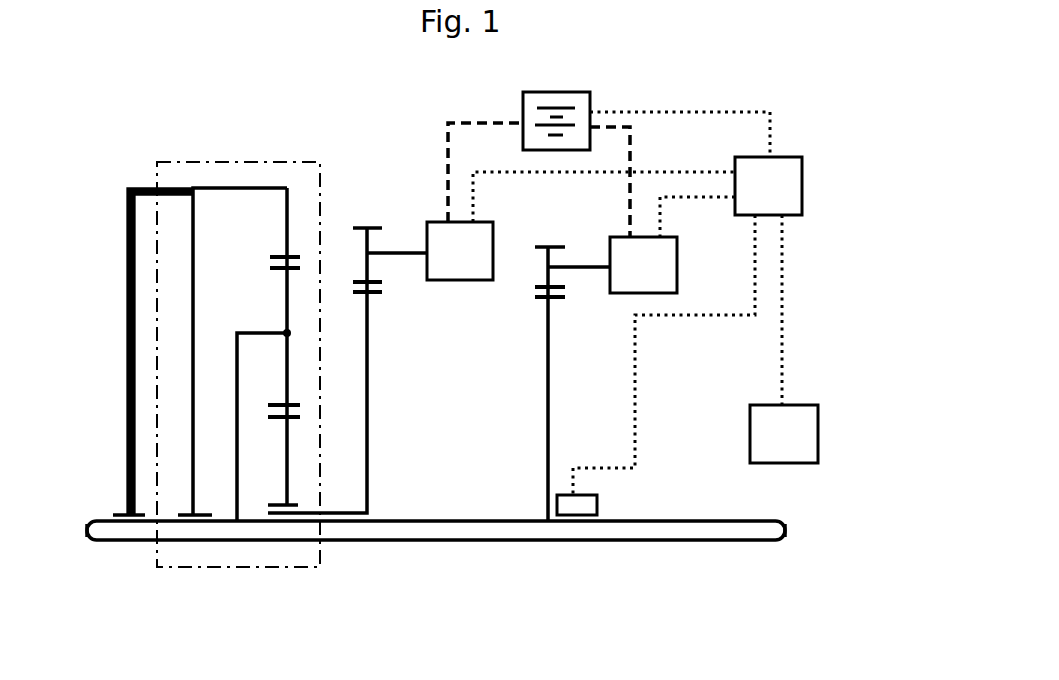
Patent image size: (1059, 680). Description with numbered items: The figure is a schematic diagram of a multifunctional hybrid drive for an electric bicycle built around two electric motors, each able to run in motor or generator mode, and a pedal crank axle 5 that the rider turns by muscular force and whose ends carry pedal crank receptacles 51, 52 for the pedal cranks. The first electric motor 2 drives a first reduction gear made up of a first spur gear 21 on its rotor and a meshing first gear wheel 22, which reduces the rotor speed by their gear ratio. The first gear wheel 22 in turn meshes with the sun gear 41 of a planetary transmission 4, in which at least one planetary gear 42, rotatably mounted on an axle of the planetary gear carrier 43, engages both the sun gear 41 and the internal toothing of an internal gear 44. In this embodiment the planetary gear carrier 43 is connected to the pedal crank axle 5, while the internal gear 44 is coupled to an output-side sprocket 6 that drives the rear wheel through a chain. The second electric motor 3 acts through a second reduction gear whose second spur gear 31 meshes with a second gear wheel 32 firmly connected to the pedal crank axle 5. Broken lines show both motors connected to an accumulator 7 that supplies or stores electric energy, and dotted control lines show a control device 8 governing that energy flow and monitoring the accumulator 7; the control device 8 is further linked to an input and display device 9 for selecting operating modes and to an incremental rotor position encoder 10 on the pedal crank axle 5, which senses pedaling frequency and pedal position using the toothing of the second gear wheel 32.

The first electric motor 2 is at (458, 267).
The second electric motor 3 is at (653, 258).
The planetary transmission 4 is at (233, 170).
The pedal crank axle 5 is at (447, 527).
The output-side sprocket 6 is at (130, 318).
The accumulator 7 is at (588, 100).
The control device 8 is at (795, 187).
The input and display device 9 is at (783, 435).
The incremental rotor position encoder 10 is at (583, 508).
The first spur gear 21 is at (365, 242).
The first gear wheel 22 is at (372, 432).
The second spur gear 31 is at (545, 278).
The second gear wheel 32 is at (547, 407).
The sun gear 41 is at (277, 463).
The planetary gear 42 is at (289, 372).
The planetary gear carrier 43 is at (253, 332).
The internal gear 44 is at (192, 413).
The pedal crank receptacle 51 is at (93, 543).
The pedal crank receptacle 52 is at (775, 537).